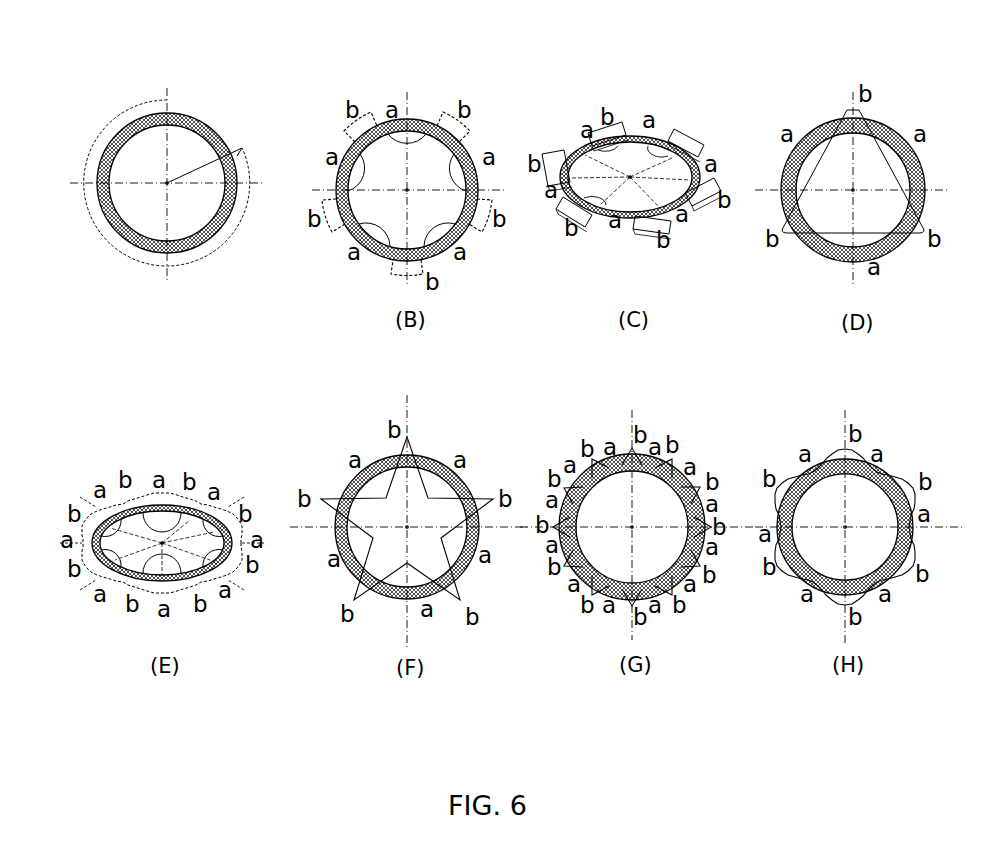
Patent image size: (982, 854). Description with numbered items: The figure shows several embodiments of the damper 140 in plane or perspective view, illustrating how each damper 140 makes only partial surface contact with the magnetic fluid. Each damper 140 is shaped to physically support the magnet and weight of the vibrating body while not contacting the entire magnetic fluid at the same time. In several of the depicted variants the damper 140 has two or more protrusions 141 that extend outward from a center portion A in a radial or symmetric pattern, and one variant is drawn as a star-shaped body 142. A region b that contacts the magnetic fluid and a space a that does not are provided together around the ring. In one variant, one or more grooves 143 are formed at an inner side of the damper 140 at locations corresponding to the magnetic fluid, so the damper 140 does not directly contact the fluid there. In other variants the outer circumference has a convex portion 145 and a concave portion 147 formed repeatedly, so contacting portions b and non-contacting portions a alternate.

The damper 140 is at (240, 70).
The protrusions 141 is at (462, 128).
The star-shaped projection 142 is at (412, 440).
The groove 143 is at (165, 503).
The convex portion 145 is at (665, 470).
The concave portion 147 is at (622, 456).
The center portion A is at (169, 182).